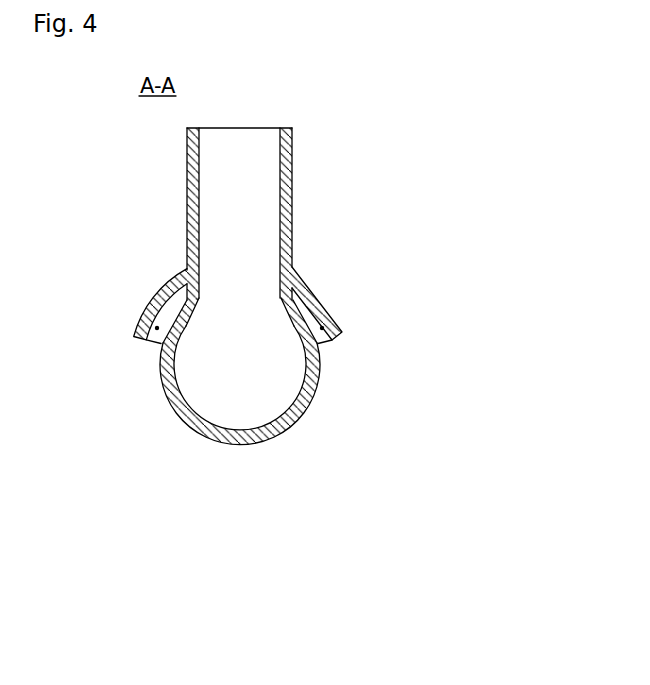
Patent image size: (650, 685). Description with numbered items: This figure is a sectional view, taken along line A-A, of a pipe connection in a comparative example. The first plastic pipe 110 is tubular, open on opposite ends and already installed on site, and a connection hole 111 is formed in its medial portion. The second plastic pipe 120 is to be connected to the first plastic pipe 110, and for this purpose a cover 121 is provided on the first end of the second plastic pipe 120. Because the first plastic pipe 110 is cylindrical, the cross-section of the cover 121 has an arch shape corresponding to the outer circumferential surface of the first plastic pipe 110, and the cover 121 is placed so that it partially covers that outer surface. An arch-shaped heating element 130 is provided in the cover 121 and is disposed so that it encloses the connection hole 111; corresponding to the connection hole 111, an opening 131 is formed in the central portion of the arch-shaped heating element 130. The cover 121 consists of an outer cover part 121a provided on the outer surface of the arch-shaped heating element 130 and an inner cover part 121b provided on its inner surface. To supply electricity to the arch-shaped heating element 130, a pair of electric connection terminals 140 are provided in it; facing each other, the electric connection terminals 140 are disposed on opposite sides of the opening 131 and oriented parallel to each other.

The first plastic pipe 110 is at (243, 442).
The connection hole 111 is at (233, 306).
The second plastic pipe 120 is at (292, 198).
The cover 121 is at (395, 304).
The outer cover part 121a is at (313, 293).
The inner cover part 121b is at (325, 322).
The arch-shaped heating element 130 is at (165, 302).
The opening 131 is at (243, 289).
The electric connection terminals 140 is at (157, 328).